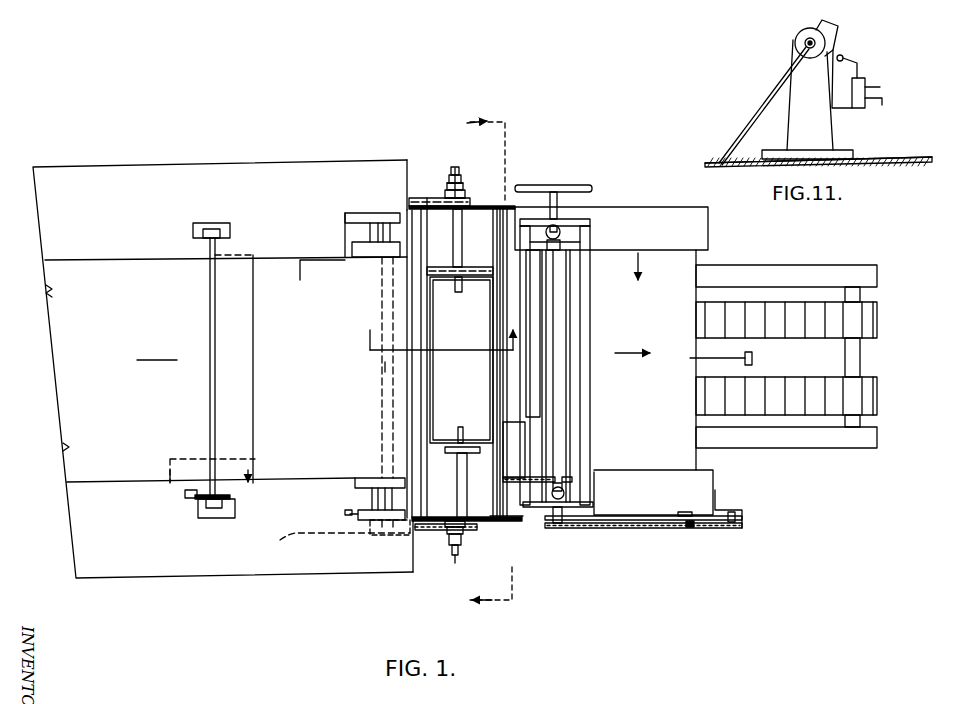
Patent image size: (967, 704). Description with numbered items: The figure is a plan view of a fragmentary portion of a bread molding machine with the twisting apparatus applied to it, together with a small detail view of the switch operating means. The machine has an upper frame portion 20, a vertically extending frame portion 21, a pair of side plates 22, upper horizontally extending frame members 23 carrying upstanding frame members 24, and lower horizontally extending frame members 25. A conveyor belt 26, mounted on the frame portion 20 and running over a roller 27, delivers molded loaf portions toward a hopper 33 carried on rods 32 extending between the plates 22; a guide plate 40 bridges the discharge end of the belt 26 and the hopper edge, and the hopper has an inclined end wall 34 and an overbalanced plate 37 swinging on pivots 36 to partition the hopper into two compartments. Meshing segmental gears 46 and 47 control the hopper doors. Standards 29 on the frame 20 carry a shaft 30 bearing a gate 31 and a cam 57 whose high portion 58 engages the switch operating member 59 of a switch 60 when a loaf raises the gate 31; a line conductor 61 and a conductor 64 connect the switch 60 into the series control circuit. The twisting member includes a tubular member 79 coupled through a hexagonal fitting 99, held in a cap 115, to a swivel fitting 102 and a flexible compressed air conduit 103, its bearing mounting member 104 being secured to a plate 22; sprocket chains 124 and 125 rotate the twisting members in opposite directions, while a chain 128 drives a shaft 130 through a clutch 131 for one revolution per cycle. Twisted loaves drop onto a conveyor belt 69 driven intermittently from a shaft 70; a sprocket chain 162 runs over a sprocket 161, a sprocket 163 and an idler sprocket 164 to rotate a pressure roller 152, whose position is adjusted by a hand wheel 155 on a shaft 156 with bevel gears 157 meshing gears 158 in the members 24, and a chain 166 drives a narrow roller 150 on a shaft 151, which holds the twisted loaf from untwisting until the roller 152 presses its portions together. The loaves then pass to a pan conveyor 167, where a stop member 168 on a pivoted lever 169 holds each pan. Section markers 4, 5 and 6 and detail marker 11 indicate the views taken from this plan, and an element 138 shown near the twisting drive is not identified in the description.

In FIG. 1, the upper frame portion 20 is at (262, 178).
In FIG. 11, the upper frame portion 20 is at (708, 162).
In FIG. 1, the vertically extending frame portion 21 is at (338, 159).
In FIG. 1, the side plates 22 is at (515, 205).
In FIG. 1, the upper horizontally extending frame members 23 is at (650, 208).
In FIG. 1, the upstanding frame members 24 is at (590, 222).
In FIG. 1, the lower horizontally extending frame members 25 is at (772, 275).
In FIG. 1, the conveyor belt 26 is at (75, 413).
In FIG. 11, the conveyor belt 26 is at (890, 157).
In FIG. 1, the roller 27 is at (365, 250).
In FIG. 1, the standards 29 is at (217, 223).
In FIG. 11, the standards 29 is at (803, 121).
In FIG. 1, the shaft 30 is at (210, 322).
In FIG. 11, the shaft 30 is at (805, 45).
In FIG. 1, the gate 31 is at (243, 390).
In FIG. 11, the gate 31 is at (770, 90).
In FIG. 1, the rods 32 is at (421, 240).
In FIG. 1, the hopper 33 is at (485, 283).
In FIG. 1, the inclined end wall 34 is at (485, 367).
In FIG. 1, the pivots 36 is at (461, 430).
In FIG. 1, the plate 37 is at (443, 383).
In FIG. 1, the guide plate 40 is at (405, 293).
In FIG. 1, the segmental gear 46 is at (463, 262).
In FIG. 1, the segmental gear 47 is at (449, 262).
In FIG. 1, the cam 57 is at (225, 495).
In FIG. 11, the cam 57 is at (797, 35).
In FIG. 11, the high portion 58 is at (836, 28).
In FIG. 11, the switch operating member 59 is at (845, 57).
In FIG. 1, the switch 60 is at (189, 498).
In FIG. 11, the switch 60 is at (866, 82).
In FIG. 11, the line conductor 61 is at (880, 88).
In FIG. 11, the conductor 64 is at (882, 105).
In FIG. 1, the conveyor belt 69 is at (682, 268).
In FIG. 1, the shaft 70 is at (688, 517).
In FIG. 1, the tubular member 79 is at (428, 205).
In FIG. 1, the hexagonal body portion 99 is at (468, 180).
In FIG. 1, the swivel fitting 102 is at (461, 185).
In FIG. 1, the flexible compressed air conduit 103 is at (458, 168).
In FIG. 1, the mounting member 104 is at (482, 218).
In FIG. 1, the cap portion 115 is at (452, 170).
In FIG. 1, the sprocket chain 124 is at (420, 198).
In FIG. 1, the sprocket chain 125 is at (330, 562).
In FIG. 1, the chain 128 is at (350, 515).
In FIG. 1, the shaft 130 is at (385, 367).
In FIG. 1, the clutch 131 is at (376, 536).
In FIG. 1, the cable 138 is at (327, 540).
In FIG. 1, the narrow roller 150 is at (537, 405).
In FIG. 1, the shaft 151 is at (518, 435).
In FIG. 1, the pressure roller 152 is at (572, 310).
In FIG. 1, the hand wheel 155 is at (565, 186).
In FIG. 1, the shaft 156 is at (548, 290).
In FIG. 1, the bevel gears 157 is at (562, 232).
In FIG. 1, the gears 158 is at (562, 226).
In FIG. 1, the sprocket 161 is at (562, 516).
In FIG. 1, the sprocket chain 162 is at (638, 528).
In FIG. 1, the sprocket 163 is at (692, 525).
In FIG. 1, the idler sprocket 164 is at (745, 521).
In FIG. 1, the sprocket chain 166 is at (540, 477).
In FIG. 1, the pan conveyor 167 is at (878, 313).
In FIG. 1, the stop member 168 is at (753, 358).
In FIG. 1, the lever 169 is at (700, 357).
In FIG. 1, the section line 4 is at (471, 285).
In FIG. 1, the section line 5 is at (480, 362).
In FIG. 1, the section line 6 is at (441, 327).
In FIG. 1, the section line 11 is at (209, 490).